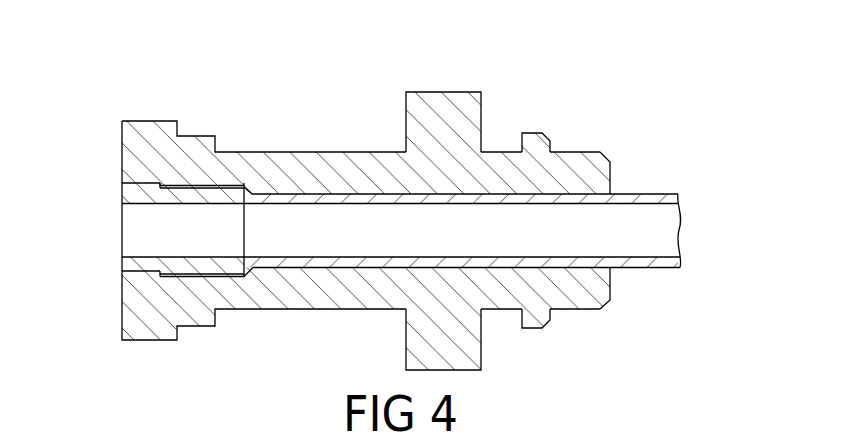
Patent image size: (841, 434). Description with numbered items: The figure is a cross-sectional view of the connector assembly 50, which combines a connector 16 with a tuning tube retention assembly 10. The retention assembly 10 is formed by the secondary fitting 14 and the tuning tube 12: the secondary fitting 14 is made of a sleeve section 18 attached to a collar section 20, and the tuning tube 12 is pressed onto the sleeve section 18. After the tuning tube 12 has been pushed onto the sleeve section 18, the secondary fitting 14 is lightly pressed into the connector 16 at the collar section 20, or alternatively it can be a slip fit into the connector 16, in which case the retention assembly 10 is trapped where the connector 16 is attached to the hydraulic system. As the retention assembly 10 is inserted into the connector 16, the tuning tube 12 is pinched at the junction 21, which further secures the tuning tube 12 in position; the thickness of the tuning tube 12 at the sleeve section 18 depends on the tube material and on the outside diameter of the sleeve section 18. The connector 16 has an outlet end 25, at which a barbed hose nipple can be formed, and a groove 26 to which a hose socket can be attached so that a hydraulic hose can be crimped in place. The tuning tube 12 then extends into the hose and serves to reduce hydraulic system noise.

The tuning tube retention assembly 10 is at (333, 268).
The tuning tube 12 is at (658, 197).
The secondary fitting 14 is at (150, 273).
The connector 16 is at (420, 128).
The sleeve section 18 is at (183, 197).
The collar section 20 is at (128, 270).
The junction 21 is at (246, 273).
The outlet end 25 is at (612, 170).
The groove 26 is at (499, 137).
The connector assembly 50 is at (275, 89).